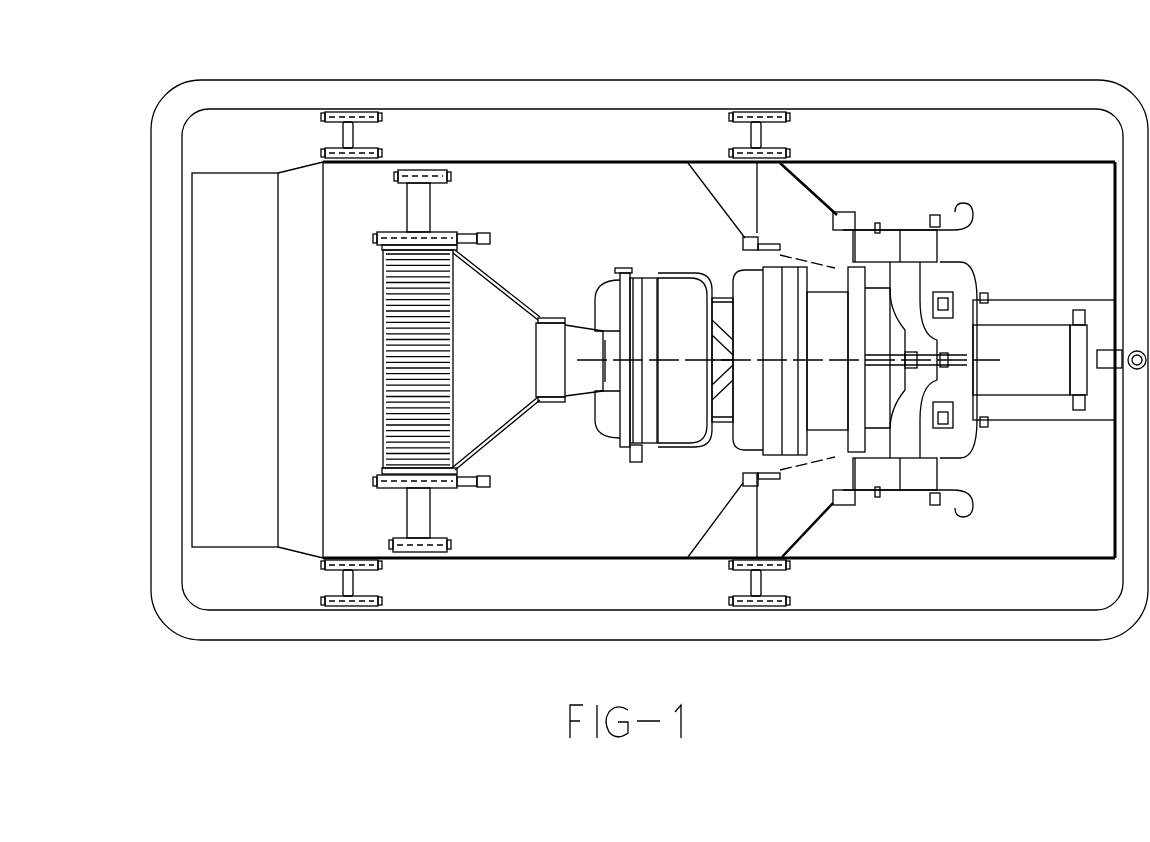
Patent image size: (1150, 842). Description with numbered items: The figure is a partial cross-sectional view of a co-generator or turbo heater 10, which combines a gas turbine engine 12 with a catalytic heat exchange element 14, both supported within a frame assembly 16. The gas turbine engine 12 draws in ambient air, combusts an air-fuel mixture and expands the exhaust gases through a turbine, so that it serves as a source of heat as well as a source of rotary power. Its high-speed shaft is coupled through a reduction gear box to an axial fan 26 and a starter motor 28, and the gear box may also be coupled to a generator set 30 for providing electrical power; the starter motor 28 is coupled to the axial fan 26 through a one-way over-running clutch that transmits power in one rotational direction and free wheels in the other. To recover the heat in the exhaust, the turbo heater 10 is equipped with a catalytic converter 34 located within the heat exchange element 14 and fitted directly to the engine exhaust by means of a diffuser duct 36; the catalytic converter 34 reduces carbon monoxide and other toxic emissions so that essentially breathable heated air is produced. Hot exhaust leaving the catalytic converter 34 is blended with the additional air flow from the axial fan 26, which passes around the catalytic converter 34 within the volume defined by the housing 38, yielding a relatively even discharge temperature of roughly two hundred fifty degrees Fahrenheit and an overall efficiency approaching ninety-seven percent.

The turbo heater 10 is at (1149, 78).
The gas turbine engine 12 is at (707, 478).
The catalytic heat exchange element 14 is at (497, 448).
The frame assembly 16 is at (719, 603).
The axial fan 26 is at (955, 385).
The starter motor 28 is at (1045, 368).
The generator set 30 is at (820, 290).
The catalytic converter 34 is at (388, 318).
The diffuser duct 36 is at (497, 283).
The housing 38 is at (533, 160).